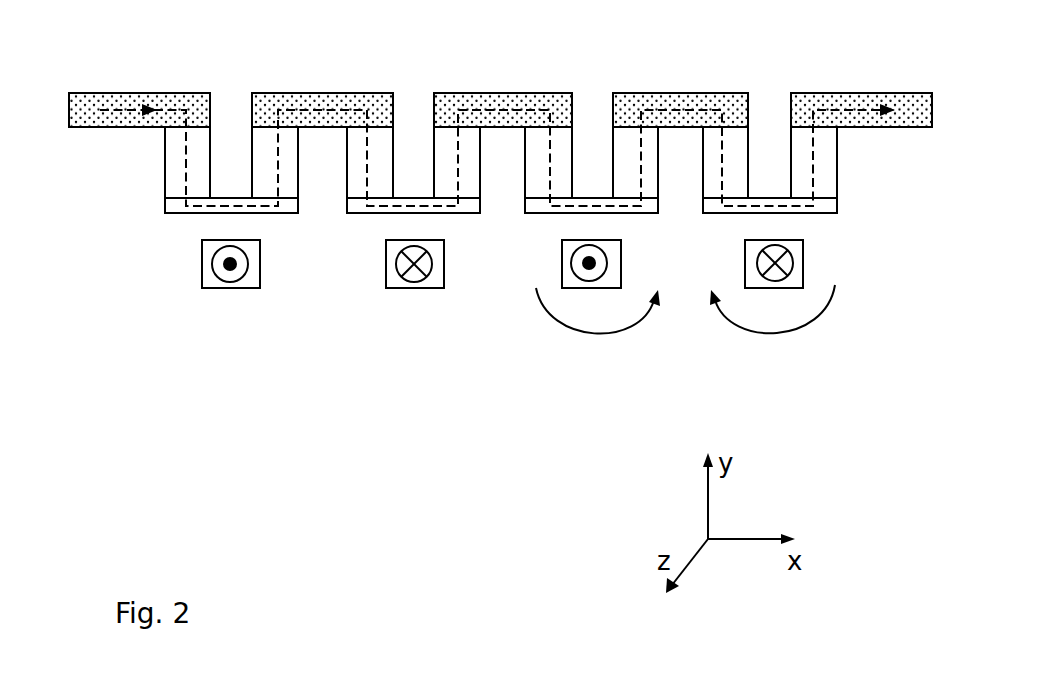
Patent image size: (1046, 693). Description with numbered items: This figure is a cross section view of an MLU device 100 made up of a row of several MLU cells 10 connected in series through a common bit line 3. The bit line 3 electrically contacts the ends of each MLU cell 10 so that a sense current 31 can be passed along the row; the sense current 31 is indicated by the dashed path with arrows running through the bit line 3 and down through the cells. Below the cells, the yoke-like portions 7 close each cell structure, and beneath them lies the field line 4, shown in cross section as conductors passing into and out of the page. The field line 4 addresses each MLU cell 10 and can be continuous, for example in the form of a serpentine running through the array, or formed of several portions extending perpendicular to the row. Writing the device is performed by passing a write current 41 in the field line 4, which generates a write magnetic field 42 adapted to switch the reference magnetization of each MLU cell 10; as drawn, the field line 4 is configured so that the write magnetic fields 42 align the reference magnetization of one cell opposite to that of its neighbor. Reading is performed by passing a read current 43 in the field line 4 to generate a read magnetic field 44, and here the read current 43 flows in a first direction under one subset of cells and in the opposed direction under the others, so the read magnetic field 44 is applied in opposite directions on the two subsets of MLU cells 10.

The bit line 3 is at (199, 97).
The sense current 31 is at (118, 107).
The MLU cell 10 is at (172, 167).
The yoke 7 is at (825, 208).
The field line 4 is at (330, 317).
The write current 41 is at (330, 317).
The read current 43 is at (227, 272).
The write magnetic field 42 is at (713, 305).
The read magnetic field 44 is at (713, 305).
The MLU device 100 is at (151, 428).